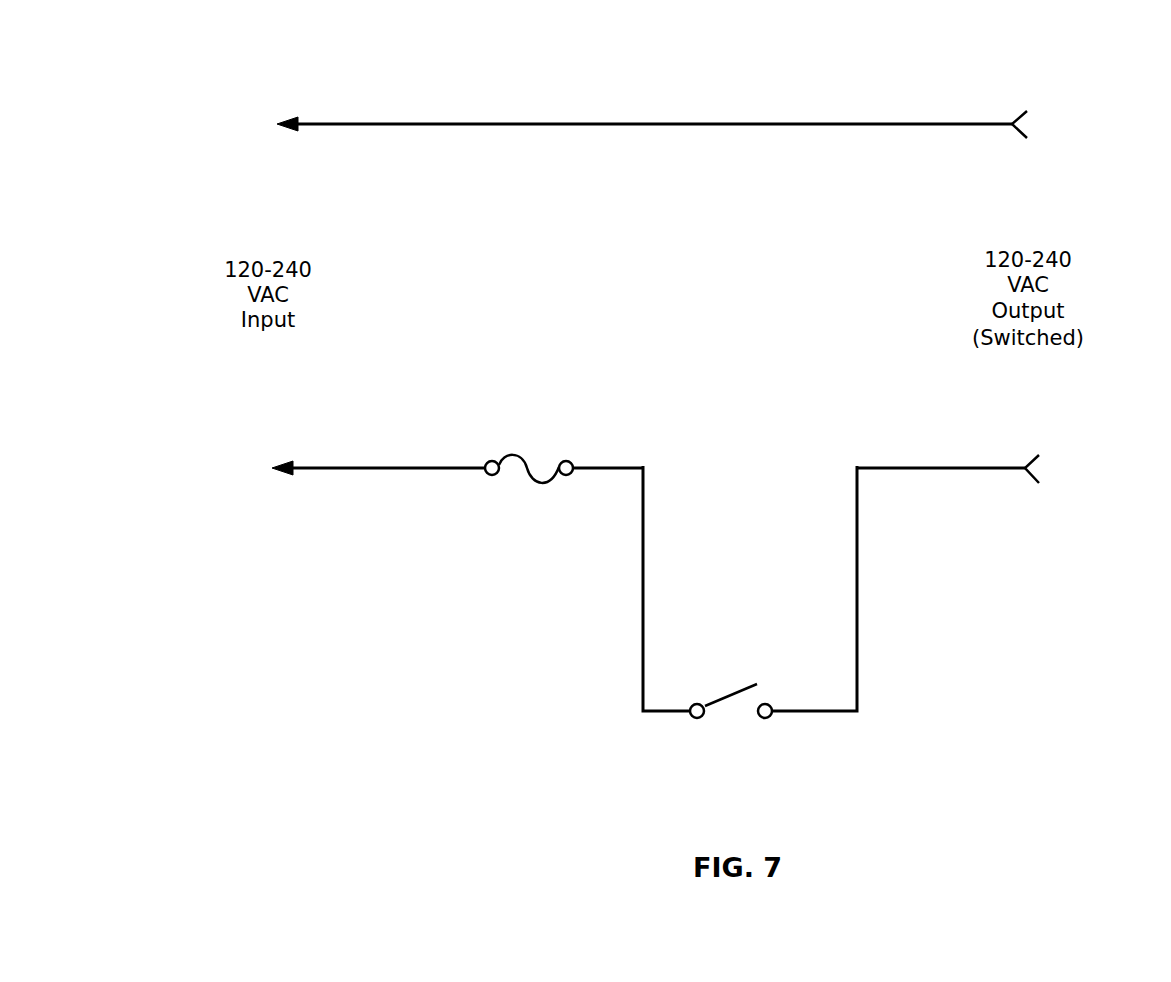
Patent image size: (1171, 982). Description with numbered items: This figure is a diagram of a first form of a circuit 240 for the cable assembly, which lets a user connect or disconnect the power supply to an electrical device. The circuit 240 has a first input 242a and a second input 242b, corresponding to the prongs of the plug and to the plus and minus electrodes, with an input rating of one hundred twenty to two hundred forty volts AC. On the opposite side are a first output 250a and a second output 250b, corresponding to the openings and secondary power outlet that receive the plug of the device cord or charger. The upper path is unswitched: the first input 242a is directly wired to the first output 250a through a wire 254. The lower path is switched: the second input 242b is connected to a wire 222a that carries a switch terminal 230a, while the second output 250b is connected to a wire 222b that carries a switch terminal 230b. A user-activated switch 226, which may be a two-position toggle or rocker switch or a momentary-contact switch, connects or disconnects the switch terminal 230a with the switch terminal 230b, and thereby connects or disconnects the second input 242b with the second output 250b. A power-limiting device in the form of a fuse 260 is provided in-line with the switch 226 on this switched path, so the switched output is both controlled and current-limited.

The circuit 240 is at (657, 85).
The wire 254 is at (521, 125).
The first input 242a is at (225, 96).
The first output 250a is at (1087, 96).
The fuse 260 is at (655, 603).
The second input 242b is at (225, 492).
The second output 250b is at (1089, 497).
The wire 222a is at (641, 609).
The wire 222b is at (857, 600).
The switch 226 is at (734, 759).
The switch terminal 230a is at (633, 740).
The switch terminal 230b is at (832, 740).